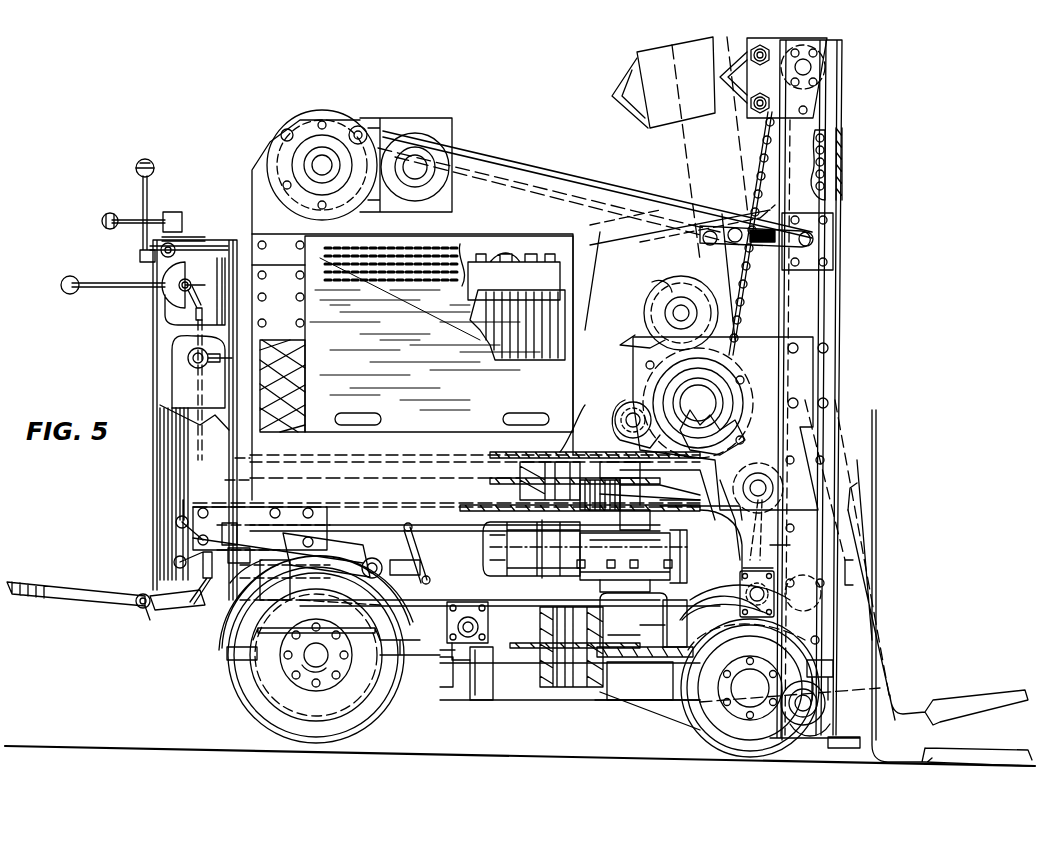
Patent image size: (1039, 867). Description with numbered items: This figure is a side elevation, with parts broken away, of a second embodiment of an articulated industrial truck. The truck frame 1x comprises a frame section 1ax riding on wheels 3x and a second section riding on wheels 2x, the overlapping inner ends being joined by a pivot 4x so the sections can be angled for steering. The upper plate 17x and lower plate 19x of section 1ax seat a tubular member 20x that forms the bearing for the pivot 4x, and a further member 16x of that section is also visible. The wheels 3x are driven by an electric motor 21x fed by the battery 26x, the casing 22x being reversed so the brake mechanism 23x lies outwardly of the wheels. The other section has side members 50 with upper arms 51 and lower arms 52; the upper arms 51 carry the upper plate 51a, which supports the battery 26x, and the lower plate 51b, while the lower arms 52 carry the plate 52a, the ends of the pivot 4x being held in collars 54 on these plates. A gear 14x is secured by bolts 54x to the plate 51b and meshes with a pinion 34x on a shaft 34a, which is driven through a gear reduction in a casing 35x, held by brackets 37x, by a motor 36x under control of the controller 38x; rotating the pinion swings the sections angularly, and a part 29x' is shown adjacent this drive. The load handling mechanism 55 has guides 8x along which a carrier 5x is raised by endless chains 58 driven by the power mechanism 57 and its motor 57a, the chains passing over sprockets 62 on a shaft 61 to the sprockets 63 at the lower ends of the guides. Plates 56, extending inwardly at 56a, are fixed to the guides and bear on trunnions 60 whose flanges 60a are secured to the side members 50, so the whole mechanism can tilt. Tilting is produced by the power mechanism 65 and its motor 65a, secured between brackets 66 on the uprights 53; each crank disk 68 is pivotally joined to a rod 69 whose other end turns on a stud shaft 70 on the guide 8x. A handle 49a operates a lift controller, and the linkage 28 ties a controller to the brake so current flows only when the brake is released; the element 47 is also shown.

The crank disk 68 is at (273, 155).
The power mechanism 65 is at (392, 118).
The motor 65a is at (432, 150).
The rod 69 is at (548, 172).
The brackets 66 is at (255, 192).
The handle 49a is at (150, 185).
The controller 38x is at (126, 215).
The lever housing 47 is at (178, 382).
The linkage 28 is at (212, 430).
The uprights 53 is at (355, 335).
The battery 26x is at (557, 318).
The motor 57a is at (657, 284).
The power mechanism 57 is at (652, 312).
The inward extension of plates 56a is at (645, 376).
The plates 56 is at (812, 342).
The load handling mechanism 55 is at (738, 392).
The guides 8x is at (845, 155).
The endless chains 58 is at (828, 188).
The stud shaft 70 is at (815, 238).
The bolts 54x is at (575, 412).
The upper plate 51a is at (500, 452).
The lower plate 51b is at (512, 470).
The upper arms 51 is at (630, 440).
The collars 54 is at (667, 484).
The pinion 34x is at (660, 492).
The upper plate 17x is at (470, 503).
The shaft 16x is at (701, 504).
The sprockets 62 is at (768, 488).
The shaft 61 is at (741, 520).
The shaft 34a is at (721, 545).
The side members 50 is at (745, 554).
The flanges 60a is at (742, 568).
The trunnions 60 is at (740, 590).
The lower plate 19x is at (690, 622).
The frame section 1ax is at (483, 548).
The operating element (gear) 14x is at (505, 505).
The motor 36x is at (478, 602).
The casing 35x is at (600, 604).
The brackets 37x is at (663, 623).
The tubular member 20x is at (602, 622).
The block 29x' is at (642, 635).
The brake mechanism 23x is at (215, 615).
The casing 22x is at (255, 705).
The wheels 3x is at (375, 722).
The truck frame 1x is at (540, 660).
The electric motor 21x is at (495, 700).
The pivot 4x is at (560, 692).
The plate 52a is at (628, 680).
The lower arms 52 is at (645, 722).
The wheels 2x is at (700, 735).
The sprockets 63 is at (882, 690).
The carrier 5x is at (918, 583).